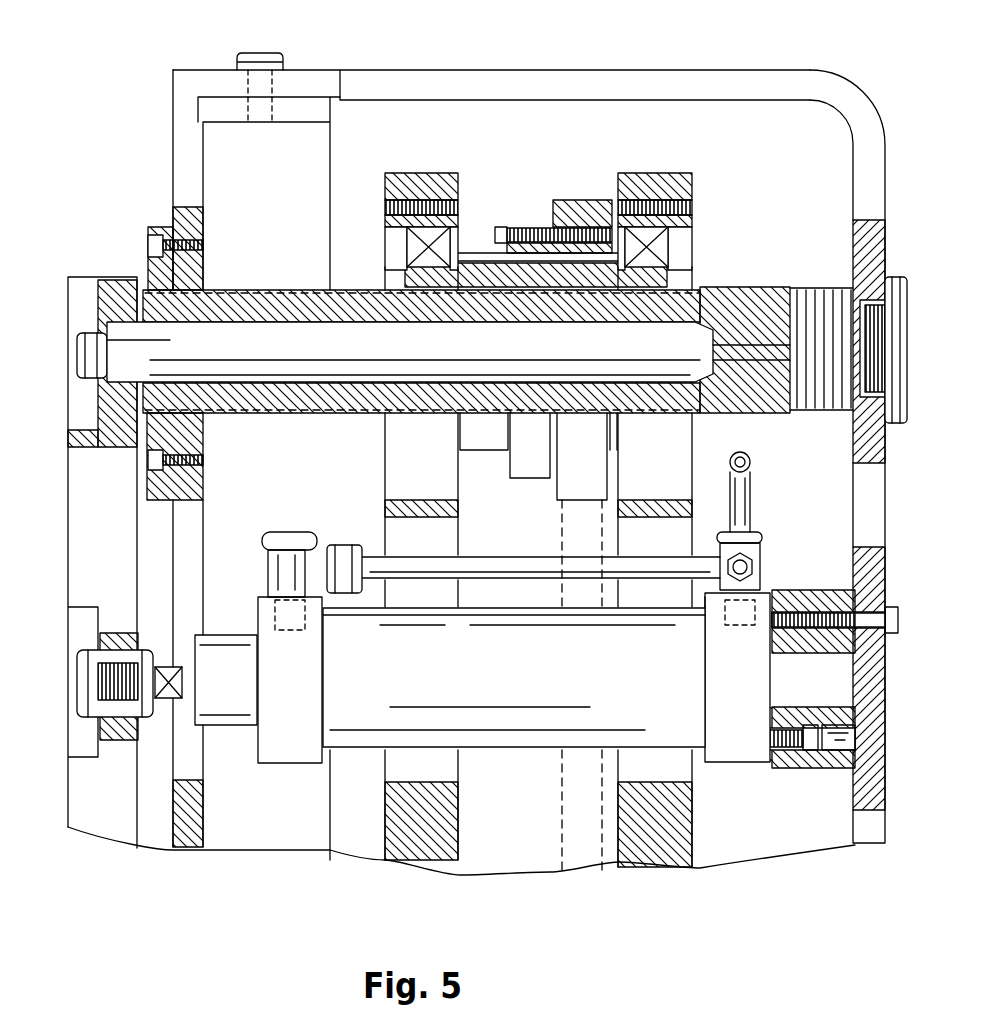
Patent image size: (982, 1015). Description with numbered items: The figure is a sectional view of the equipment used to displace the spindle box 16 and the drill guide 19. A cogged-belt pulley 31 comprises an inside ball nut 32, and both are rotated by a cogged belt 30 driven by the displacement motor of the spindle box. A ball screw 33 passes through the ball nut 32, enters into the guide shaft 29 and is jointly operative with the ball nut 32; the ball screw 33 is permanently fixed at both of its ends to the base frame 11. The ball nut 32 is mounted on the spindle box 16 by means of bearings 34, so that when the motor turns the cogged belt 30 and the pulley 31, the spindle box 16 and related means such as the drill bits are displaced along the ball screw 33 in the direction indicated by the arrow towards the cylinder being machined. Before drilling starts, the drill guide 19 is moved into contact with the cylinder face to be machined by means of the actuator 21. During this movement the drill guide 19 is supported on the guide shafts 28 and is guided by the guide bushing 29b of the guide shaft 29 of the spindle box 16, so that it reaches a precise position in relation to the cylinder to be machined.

The base frame 11 is at (776, 76).
The spindle box 16 is at (513, 70).
The drill guide 19 is at (80, 433).
The actuator 21 is at (497, 690).
The guide shafts 28 is at (283, 335).
The guide shaft 29 is at (775, 310).
The guide bushing 29b is at (718, 300).
The cogged belt 30 is at (585, 205).
The cogged-belt pulley 31 is at (510, 232).
The ball nut 32 is at (470, 275).
The ball screw 33 is at (338, 292).
The bearings 34 is at (440, 205).